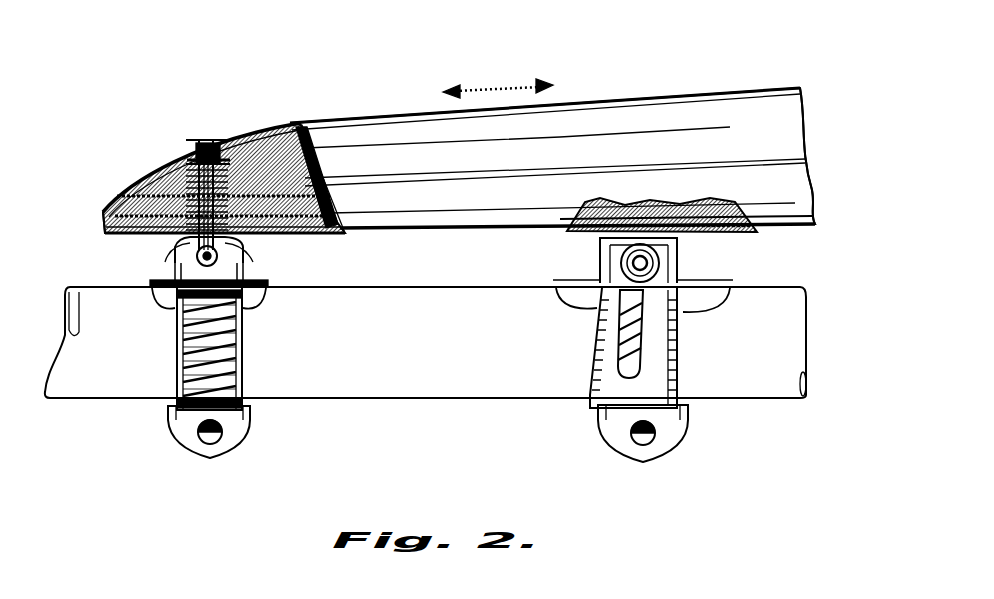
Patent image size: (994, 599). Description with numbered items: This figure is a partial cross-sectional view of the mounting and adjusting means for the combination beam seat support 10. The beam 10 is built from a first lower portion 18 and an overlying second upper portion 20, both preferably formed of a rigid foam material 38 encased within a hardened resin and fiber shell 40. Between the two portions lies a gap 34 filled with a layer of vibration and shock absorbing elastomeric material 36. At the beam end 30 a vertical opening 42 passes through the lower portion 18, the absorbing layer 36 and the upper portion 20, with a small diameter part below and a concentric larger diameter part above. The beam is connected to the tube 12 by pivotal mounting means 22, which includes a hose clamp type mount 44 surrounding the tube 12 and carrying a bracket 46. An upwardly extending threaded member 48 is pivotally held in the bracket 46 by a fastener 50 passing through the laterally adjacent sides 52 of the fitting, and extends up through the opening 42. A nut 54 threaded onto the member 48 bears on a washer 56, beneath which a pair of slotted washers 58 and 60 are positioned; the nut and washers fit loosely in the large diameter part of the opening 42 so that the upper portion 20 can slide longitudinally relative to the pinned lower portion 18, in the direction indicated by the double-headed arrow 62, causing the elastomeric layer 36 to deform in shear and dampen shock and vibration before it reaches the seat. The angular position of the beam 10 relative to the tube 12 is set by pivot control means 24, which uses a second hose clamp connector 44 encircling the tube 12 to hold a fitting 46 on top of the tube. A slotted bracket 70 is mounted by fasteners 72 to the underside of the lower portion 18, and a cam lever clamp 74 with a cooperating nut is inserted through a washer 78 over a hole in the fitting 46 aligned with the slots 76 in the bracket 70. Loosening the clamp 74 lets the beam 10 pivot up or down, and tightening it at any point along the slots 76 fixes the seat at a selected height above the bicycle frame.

The combination beam seat support 10 is at (413, 100).
The tube 12 is at (407, 400).
The first lower portion 18 is at (797, 193).
The second upper portion 20 is at (762, 97).
The pivotal mounting means 22 is at (160, 300).
The pivot control means 24 is at (703, 299).
The beam end 30 is at (110, 190).
The gap 34 is at (812, 158).
The vibration and shock absorbing material 36 is at (103, 213).
The rigid foam material 38 is at (352, 232).
The hardened resin and fiber shell 40 is at (143, 177).
The vertical opening 42 is at (226, 142).
The hose clamp type mount 44 is at (230, 447).
The bracket 46 is at (260, 274).
The threaded member 48 is at (183, 233).
The fastener 50 is at (173, 257).
The laterally adjacent sides 52 is at (247, 238).
The nut 54 is at (197, 153).
The washer 56 is at (229, 147).
The slotted washer 58 is at (278, 150).
The slotted washer 60 is at (298, 145).
The direction of adjustment 62 is at (495, 85).
The slotted bracket 70 is at (593, 383).
The fasteners 72 is at (580, 240).
The cam lever clamp 74 is at (620, 258).
The slots 76 is at (665, 350).
The washer 78 is at (672, 257).